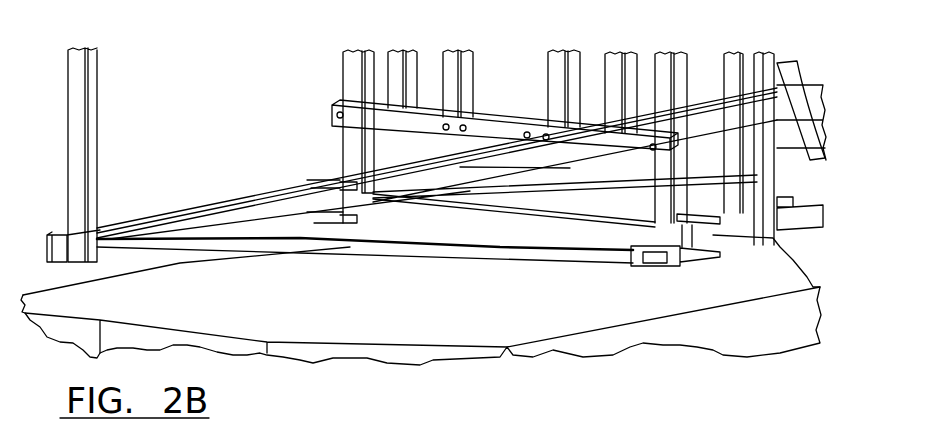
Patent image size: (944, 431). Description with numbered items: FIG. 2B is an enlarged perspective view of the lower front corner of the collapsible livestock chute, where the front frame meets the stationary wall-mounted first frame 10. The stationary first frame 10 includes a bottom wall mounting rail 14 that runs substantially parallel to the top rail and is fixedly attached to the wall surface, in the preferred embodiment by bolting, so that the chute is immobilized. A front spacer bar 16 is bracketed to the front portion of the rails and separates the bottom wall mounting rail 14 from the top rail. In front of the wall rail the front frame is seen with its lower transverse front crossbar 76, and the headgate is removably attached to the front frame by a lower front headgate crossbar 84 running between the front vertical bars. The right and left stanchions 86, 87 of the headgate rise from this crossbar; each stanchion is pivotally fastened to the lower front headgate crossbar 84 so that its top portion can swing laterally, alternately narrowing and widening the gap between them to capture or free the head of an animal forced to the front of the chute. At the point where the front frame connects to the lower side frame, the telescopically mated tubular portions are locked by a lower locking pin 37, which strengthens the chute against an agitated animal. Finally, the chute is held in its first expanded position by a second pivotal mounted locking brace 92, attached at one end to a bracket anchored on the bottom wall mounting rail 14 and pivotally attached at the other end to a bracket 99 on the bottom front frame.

The first frame 10 is at (270, 200).
The bottom wall mounting rail 14 is at (237, 200).
The front spacer bar 16 is at (98, 75).
The lower locking pin 37 is at (797, 193).
The lower transverse front crossbar 76 is at (480, 140).
The lower front headgate crossbar 84 is at (568, 147).
The right stanchion 86 is at (443, 68).
The left stanchion 87 is at (547, 95).
The second pivotal mounted locking brace 92 is at (377, 257).
The bracket 99 is at (690, 218).